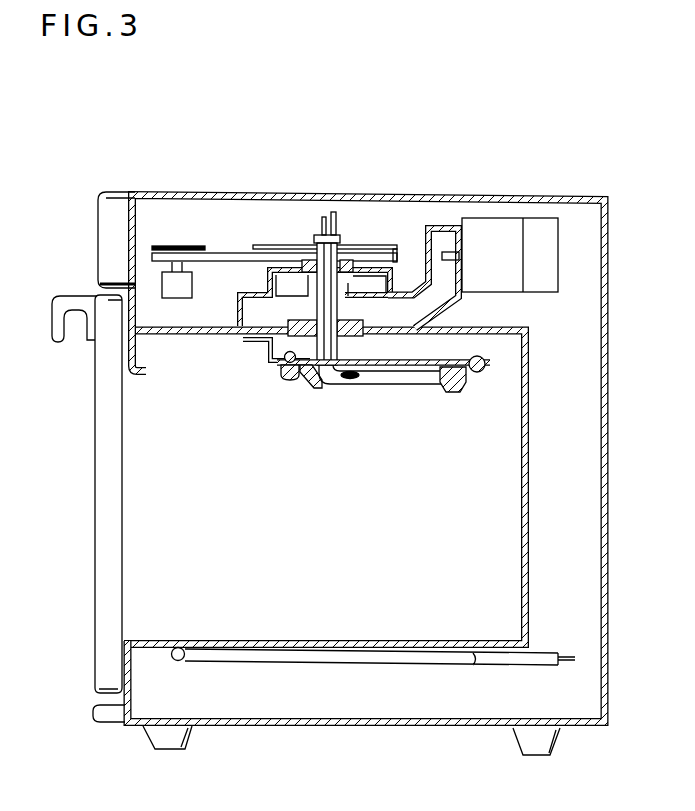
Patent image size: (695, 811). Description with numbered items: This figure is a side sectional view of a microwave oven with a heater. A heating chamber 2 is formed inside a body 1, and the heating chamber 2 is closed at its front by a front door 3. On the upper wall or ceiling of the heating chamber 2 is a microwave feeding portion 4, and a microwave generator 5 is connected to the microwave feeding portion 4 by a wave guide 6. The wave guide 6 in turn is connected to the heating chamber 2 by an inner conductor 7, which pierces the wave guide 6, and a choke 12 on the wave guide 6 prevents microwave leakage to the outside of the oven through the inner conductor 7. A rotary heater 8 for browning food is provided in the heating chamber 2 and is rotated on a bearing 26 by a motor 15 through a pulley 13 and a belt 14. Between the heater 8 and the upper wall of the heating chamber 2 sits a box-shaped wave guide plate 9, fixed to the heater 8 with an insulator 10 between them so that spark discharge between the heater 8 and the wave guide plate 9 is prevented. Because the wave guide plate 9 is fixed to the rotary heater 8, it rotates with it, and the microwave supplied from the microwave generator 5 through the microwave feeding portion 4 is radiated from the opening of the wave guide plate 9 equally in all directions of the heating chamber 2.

The body 1 is at (603, 548).
The heating chamber 2 is at (490, 517).
The front door 3 is at (112, 427).
The microwave feeding portion 4 is at (300, 337).
The microwave generator 5 is at (498, 245).
The wave guide 6 is at (438, 238).
The inner conductor 7 is at (300, 366).
The rotary heater 8 is at (360, 384).
The wave guide plate 9 is at (485, 363).
The insulator 10 is at (468, 388).
The choke 12 is at (362, 282).
The pulley 13 is at (273, 245).
The belt 14 is at (232, 253).
The motor 15 is at (162, 287).
The bearing 26 is at (350, 264).